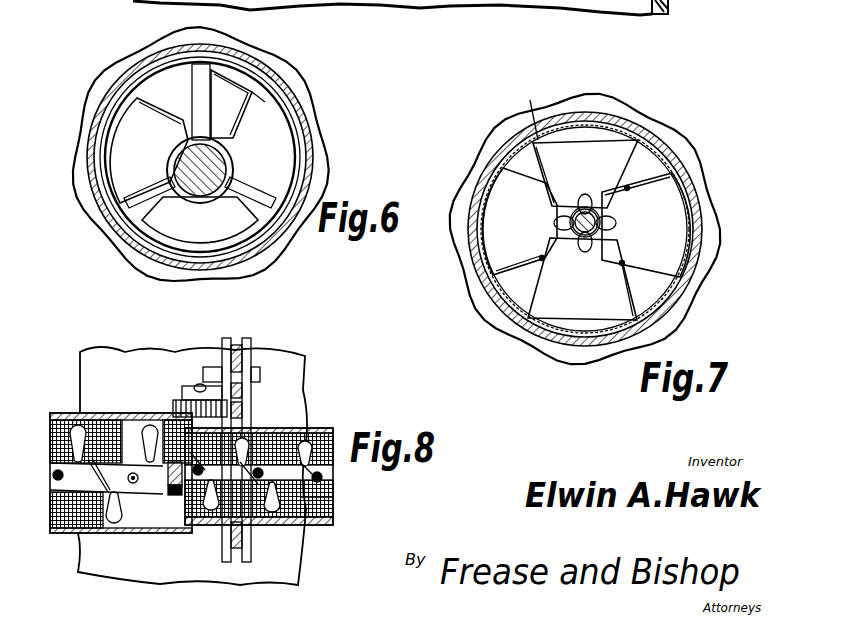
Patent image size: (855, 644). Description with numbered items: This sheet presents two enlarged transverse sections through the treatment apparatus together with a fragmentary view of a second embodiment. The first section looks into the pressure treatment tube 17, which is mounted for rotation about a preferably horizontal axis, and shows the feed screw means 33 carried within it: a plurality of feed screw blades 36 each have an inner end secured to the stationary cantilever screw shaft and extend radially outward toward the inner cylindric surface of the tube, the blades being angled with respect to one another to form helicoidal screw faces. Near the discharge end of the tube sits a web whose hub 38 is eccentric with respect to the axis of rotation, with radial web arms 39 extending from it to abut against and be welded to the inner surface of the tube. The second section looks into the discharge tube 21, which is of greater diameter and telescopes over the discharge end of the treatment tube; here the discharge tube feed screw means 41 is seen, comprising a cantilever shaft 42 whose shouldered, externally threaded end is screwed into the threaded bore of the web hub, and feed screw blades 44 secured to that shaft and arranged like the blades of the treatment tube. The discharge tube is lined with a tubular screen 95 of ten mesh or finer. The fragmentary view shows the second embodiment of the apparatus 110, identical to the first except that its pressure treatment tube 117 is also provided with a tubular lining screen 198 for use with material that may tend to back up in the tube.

In FIG. 6, the pressure treatment tube 17 is at (290, 133).
In FIG. 6, the discharge tube 21 is at (310, 122).
In FIG. 7, the discharge tube 21 is at (672, 173).
In FIG. 6, the feed screw means 33 is at (138, 98).
In FIG. 6, the feed screw blades 36 is at (130, 128).
In FIG. 6, the web hub 38 is at (234, 169).
In FIG. 6, the radial web arms 39 is at (195, 122).
In FIG. 7, the discharge tube feed screw means 41 is at (632, 156).
In FIG. 6, the cantilever shaft 42 is at (208, 200).
In FIG. 7, the cantilever shaft 42 is at (580, 208).
In FIG. 7, the feed screw blades 44 is at (500, 277).
In FIG. 7, the tubular screen 95 is at (519, 110).
In FIG. 8, the apparatus 110 is at (305, 551).
In FIG. 8, the pressure treatment tube 117 is at (310, 428).
In FIG. 8, the tubular lining screen 198 is at (326, 499).